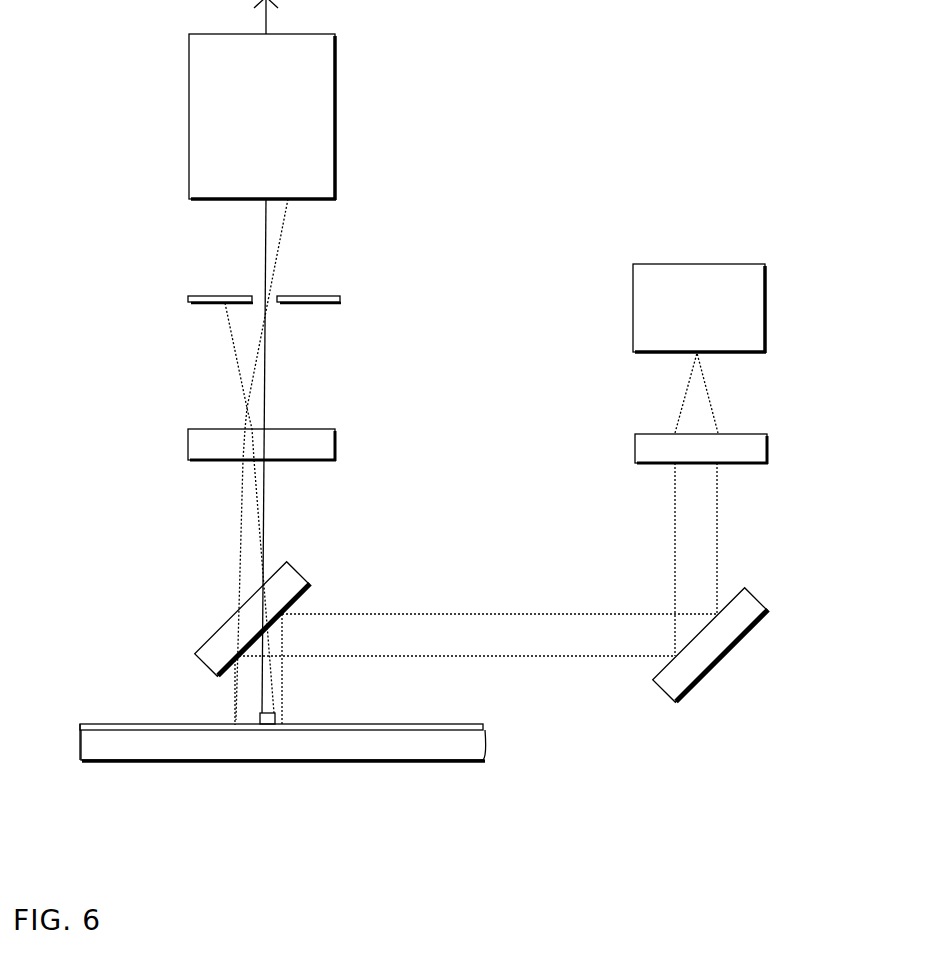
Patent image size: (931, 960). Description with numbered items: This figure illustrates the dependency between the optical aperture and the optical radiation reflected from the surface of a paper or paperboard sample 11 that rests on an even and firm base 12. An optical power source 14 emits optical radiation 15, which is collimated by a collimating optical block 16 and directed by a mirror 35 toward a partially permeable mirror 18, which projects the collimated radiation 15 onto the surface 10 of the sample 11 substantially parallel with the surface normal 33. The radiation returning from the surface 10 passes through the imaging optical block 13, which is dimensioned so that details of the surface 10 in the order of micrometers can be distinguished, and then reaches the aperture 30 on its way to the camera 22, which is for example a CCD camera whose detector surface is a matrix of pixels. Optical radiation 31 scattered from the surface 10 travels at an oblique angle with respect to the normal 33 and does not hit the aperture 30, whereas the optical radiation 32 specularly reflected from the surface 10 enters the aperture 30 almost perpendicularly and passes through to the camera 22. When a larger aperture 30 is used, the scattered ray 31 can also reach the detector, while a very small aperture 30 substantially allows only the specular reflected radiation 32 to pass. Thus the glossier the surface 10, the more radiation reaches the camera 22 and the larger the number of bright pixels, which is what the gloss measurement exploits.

The surface 10 is at (389, 723).
The sample 11 is at (485, 732).
The base 12 is at (80, 738).
The imaging optical block 13 is at (188, 445).
The optical power source 14 is at (684, 264).
The optical radiation 15 is at (467, 613).
The collimating optical block 16 is at (635, 446).
The partially permeable mirror 18 is at (294, 570).
The camera 22 is at (189, 67).
The aperture 30 is at (275, 311).
The scattered optical radiation 31 is at (231, 340).
The specular reflected optical radiation 32 is at (255, 377).
The normal 33 is at (265, 226).
The mirror 35 is at (752, 594).